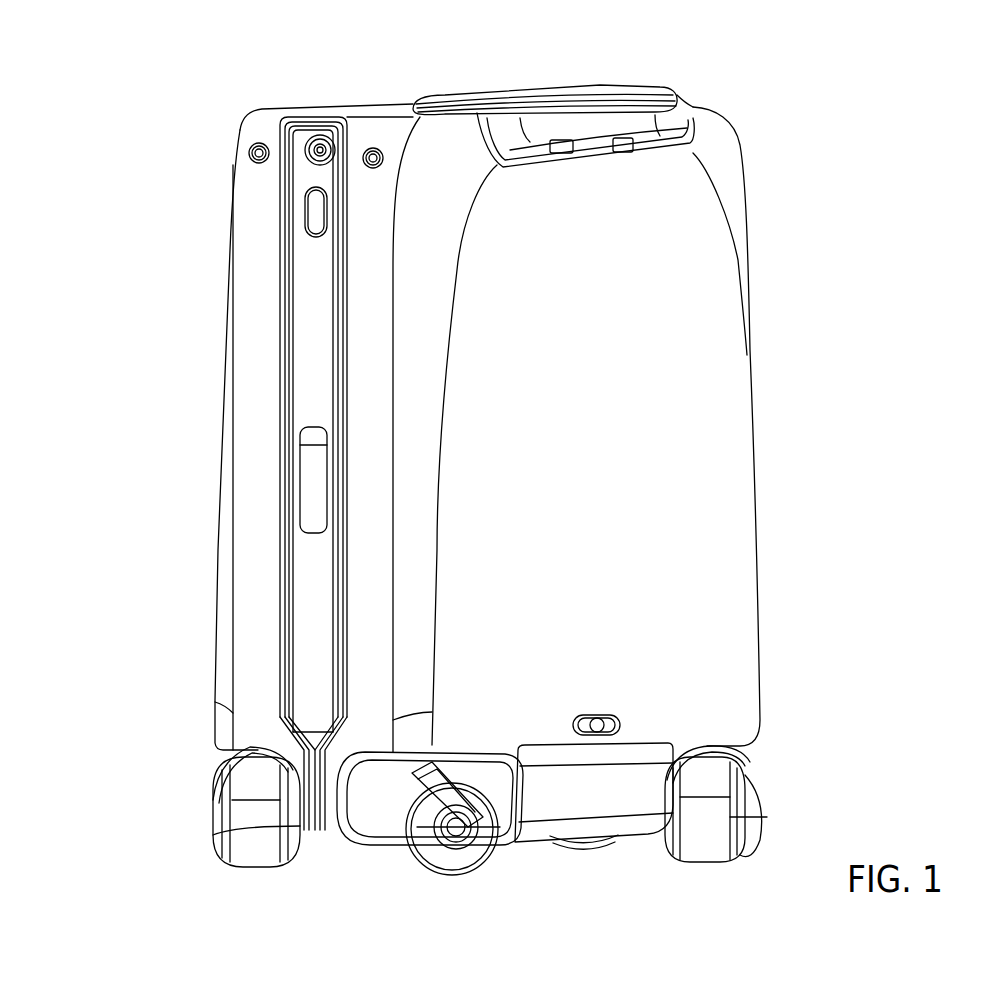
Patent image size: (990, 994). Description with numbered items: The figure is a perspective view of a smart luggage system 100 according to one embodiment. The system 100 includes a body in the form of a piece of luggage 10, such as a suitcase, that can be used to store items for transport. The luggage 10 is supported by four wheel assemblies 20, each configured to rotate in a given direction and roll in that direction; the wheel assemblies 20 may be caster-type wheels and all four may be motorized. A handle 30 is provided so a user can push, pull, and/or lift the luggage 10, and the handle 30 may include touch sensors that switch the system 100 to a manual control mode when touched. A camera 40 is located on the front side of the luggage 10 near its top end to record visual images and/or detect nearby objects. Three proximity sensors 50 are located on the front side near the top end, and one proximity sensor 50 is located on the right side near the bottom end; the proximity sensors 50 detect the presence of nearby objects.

The smart luggage system 100 is at (892, 73).
The luggage 10 is at (733, 464).
The wheel assemblies 20 is at (260, 852).
The handle 30 is at (594, 85).
The camera 40 is at (304, 117).
The proximity sensors 50 is at (365, 160).